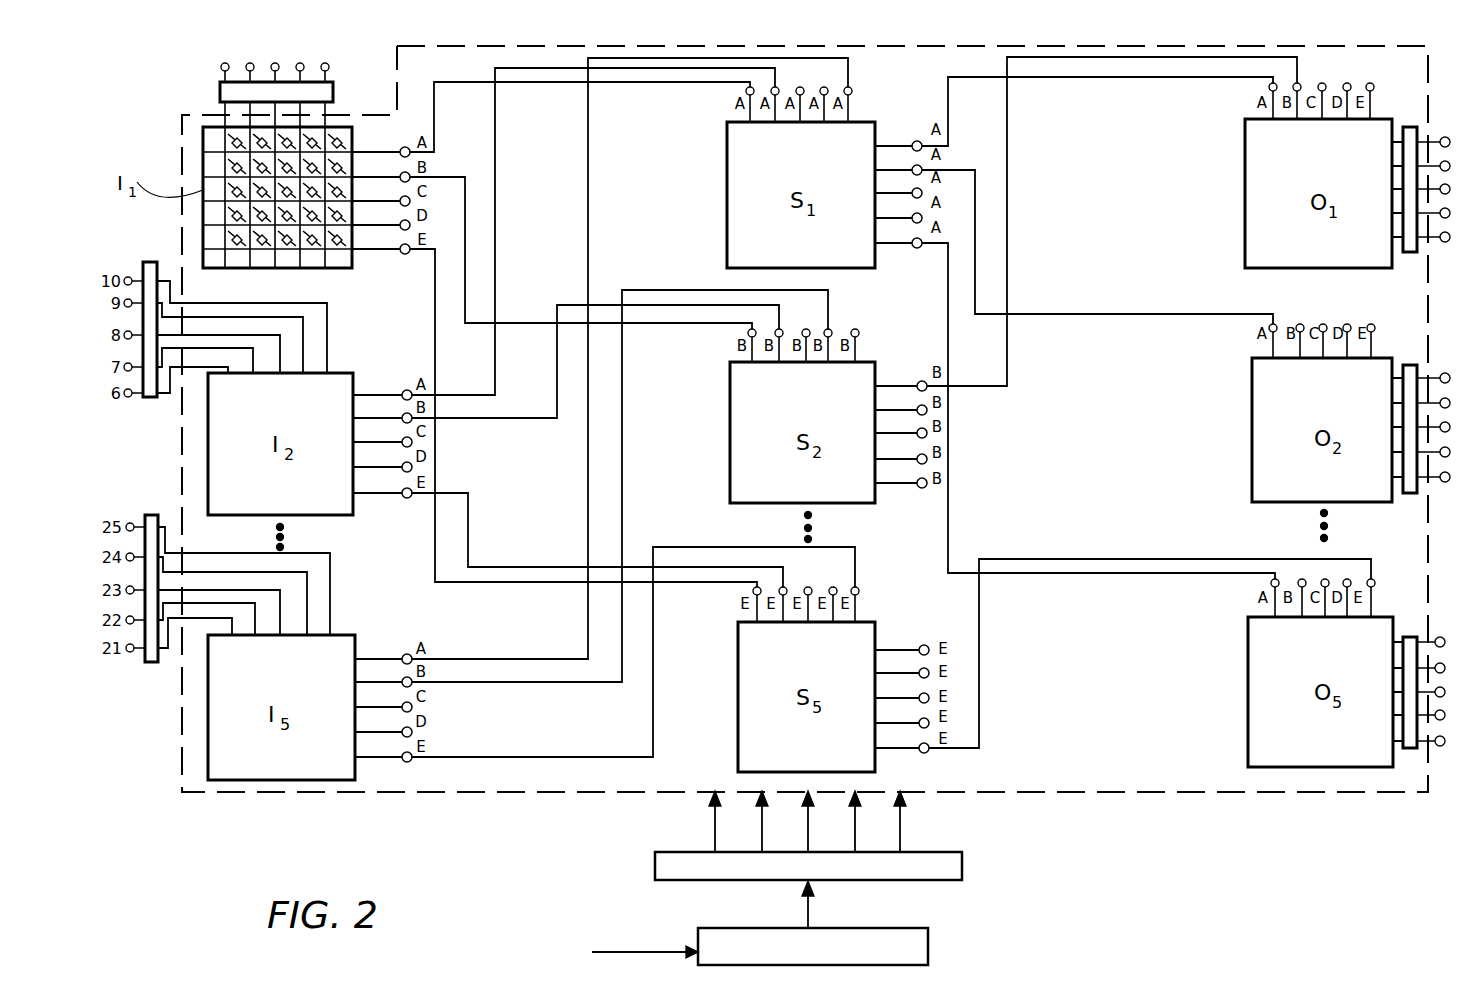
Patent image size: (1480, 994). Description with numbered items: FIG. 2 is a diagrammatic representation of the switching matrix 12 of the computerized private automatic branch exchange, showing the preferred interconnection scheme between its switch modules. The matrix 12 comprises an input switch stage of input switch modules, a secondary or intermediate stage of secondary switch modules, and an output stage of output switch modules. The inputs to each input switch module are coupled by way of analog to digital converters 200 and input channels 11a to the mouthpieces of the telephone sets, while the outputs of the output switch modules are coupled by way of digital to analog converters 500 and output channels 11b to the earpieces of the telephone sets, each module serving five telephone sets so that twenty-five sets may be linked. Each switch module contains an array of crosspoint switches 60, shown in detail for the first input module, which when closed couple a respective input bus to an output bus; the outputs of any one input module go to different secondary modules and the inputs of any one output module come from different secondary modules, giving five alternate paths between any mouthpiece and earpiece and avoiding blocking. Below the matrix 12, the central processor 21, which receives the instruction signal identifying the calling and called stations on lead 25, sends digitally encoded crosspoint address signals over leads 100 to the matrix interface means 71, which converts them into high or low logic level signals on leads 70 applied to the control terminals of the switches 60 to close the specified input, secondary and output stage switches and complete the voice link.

The input channel 11a is at (221, 72).
The analog to digital converter 200 is at (335, 90).
The switch 60 is at (236, 142).
The output channel 11b is at (1432, 127).
The digital to analog converter 500 is at (1410, 127).
The switching matrix 12 is at (1320, 792).
The leads 70 is at (898, 836).
The matrix interface means 71 is at (922, 880).
The leads 100 is at (808, 908).
The lead 25 is at (615, 952).
The central processor 21 is at (930, 957).